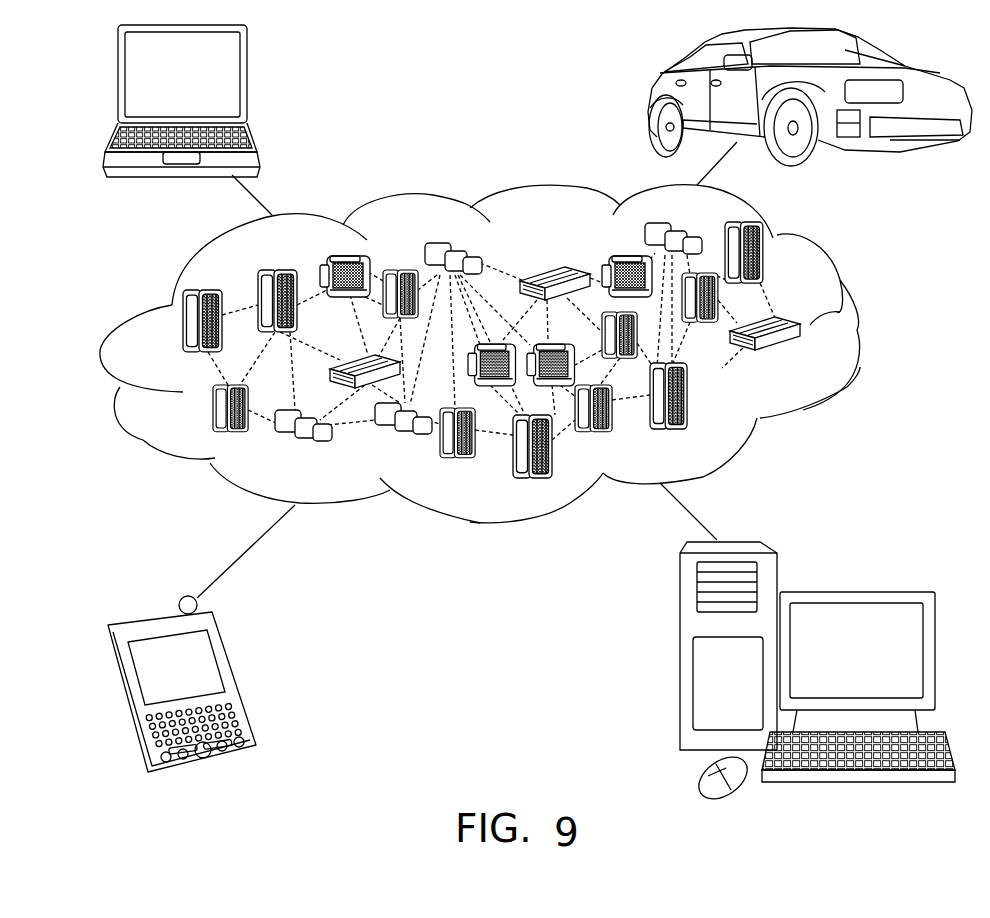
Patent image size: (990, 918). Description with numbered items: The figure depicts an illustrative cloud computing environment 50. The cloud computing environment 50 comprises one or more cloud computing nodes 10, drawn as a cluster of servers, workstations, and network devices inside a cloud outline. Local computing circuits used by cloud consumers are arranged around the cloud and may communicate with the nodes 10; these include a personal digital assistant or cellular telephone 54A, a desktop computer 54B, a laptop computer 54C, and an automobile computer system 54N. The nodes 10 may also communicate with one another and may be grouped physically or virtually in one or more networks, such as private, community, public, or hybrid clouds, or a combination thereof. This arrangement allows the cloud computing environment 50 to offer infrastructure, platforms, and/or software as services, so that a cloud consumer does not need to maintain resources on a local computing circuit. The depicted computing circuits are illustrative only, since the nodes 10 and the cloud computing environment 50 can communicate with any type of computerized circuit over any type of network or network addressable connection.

The cloud computing nodes 10 is at (505, 354).
The cloud computing environment 50 is at (860, 333).
The personal digital assistant (PDA) or cellular telephone 54A is at (235, 676).
The desktop computer 54B is at (855, 592).
The laptop computer 54C is at (247, 82).
The automobile computer system 54N is at (652, 97).